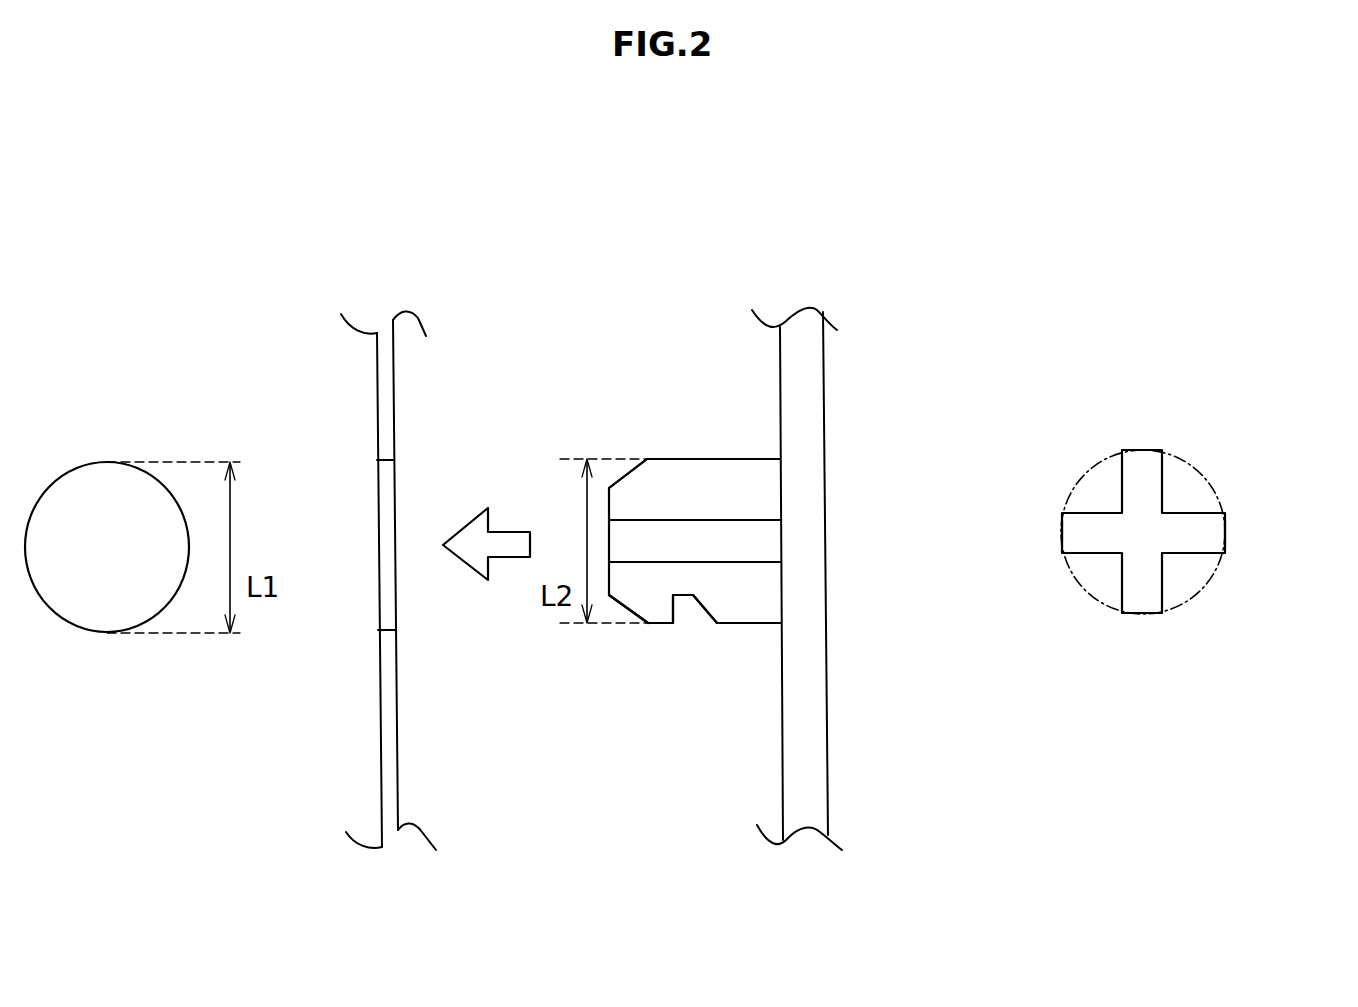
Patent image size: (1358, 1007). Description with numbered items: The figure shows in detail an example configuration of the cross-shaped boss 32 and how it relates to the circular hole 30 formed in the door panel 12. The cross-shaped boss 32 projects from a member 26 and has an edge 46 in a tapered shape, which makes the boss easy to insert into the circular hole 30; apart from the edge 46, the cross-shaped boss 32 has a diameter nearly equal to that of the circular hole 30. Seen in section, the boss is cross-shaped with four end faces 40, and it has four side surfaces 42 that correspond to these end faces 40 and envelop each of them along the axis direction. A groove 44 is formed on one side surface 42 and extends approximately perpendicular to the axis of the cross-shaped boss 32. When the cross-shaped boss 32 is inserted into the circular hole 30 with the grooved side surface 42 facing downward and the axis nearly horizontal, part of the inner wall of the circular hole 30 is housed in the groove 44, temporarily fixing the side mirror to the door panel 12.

The door panel 12 is at (407, 379).
The holding member 26 is at (832, 368).
The circular hole 30 is at (68, 470).
The cross-shaped boss 32 is at (696, 446).
The end face 40 is at (1127, 442).
The side surface 42 is at (732, 457).
The groove 44 is at (688, 622).
The edge 46 is at (625, 476).